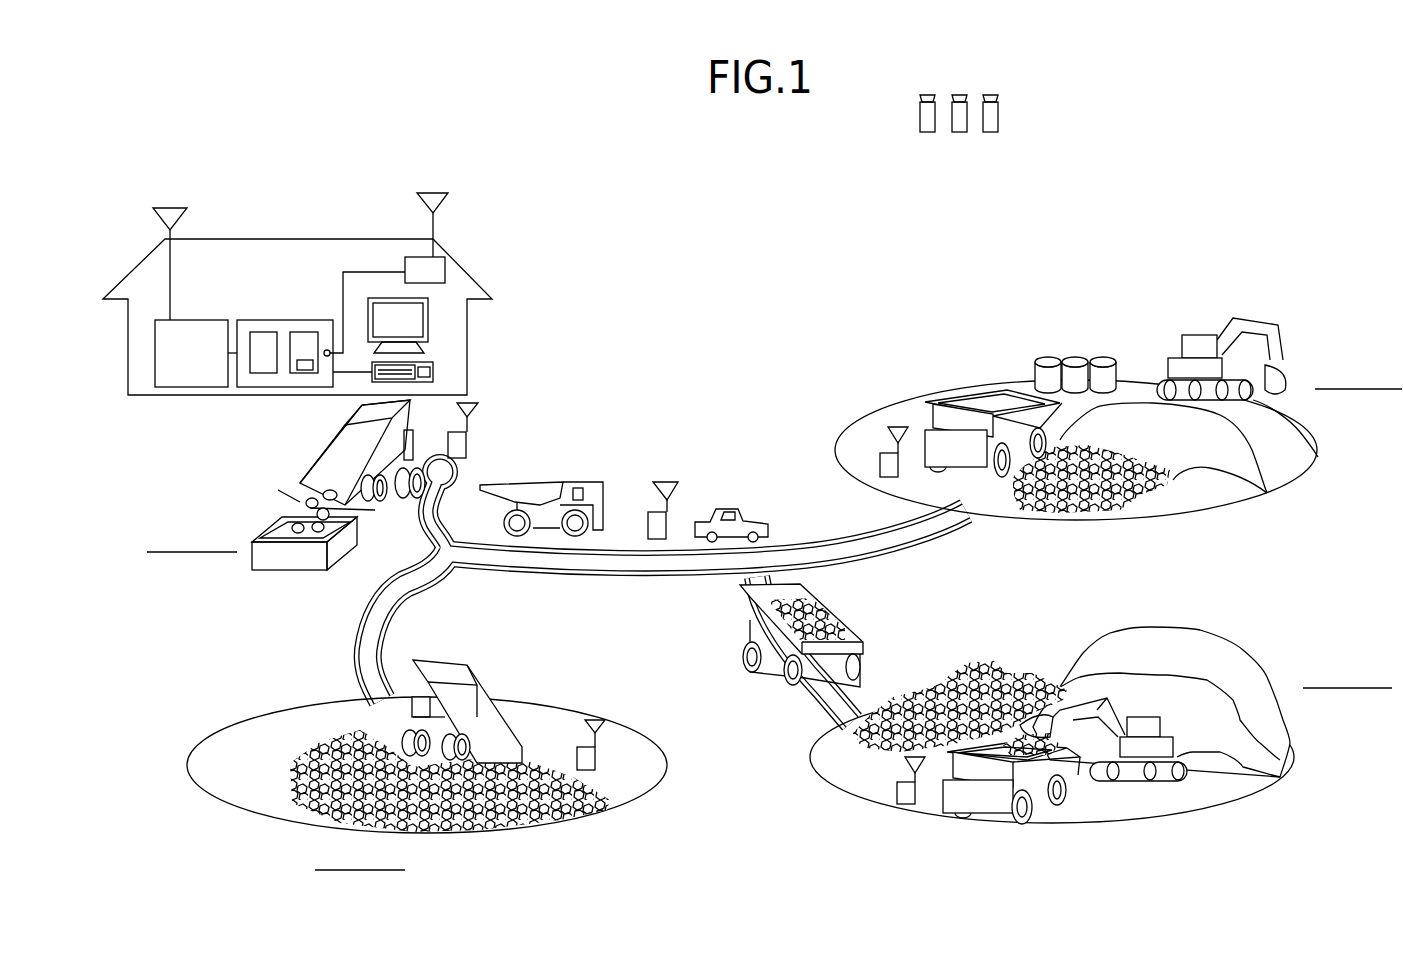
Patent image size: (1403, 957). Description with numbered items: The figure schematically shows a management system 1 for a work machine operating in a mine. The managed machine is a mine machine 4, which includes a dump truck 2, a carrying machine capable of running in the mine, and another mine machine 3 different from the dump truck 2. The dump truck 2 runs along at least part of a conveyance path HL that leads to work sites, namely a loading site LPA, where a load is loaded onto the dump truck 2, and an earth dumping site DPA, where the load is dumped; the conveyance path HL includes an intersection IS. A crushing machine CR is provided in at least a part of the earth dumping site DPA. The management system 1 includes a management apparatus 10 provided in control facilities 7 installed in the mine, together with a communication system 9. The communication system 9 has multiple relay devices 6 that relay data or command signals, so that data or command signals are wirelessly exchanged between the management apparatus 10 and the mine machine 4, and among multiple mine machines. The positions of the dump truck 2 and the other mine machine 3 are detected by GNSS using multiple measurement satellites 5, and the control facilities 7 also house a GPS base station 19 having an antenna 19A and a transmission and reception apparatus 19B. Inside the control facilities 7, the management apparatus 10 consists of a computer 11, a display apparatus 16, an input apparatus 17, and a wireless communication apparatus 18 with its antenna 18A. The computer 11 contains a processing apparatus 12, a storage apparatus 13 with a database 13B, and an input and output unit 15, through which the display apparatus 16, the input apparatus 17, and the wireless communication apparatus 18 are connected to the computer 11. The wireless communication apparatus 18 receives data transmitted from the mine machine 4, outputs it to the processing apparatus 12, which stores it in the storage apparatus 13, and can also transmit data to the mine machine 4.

The management system 1 is at (1111, 187).
The dump truck 2 is at (345, 430).
The another mine machine 3 is at (729, 508).
The mine machine 4 is at (774, 571).
The measurement satellite 5 is at (927, 133).
The relay device 6 is at (469, 425).
The control facilities 7 is at (346, 236).
The communication system 9 is at (616, 233).
The management apparatus 10 is at (307, 257).
The computer 11 is at (283, 317).
The processing apparatus 12 is at (266, 333).
The storage apparatus 13 is at (308, 333).
The database 13B is at (297, 366).
The input and output unit 15 is at (327, 350).
The display apparatus 16 is at (428, 318).
The input apparatus 17 is at (433, 372).
The wireless communication apparatus 18 is at (414, 257).
The antenna 18A is at (433, 193).
The GPS base station 19 is at (195, 305).
The antenna 19A is at (172, 267).
The transmission and reception apparatus 19B is at (193, 337).
The crushing machine CR is at (288, 573).
The earth dumping site DPA is at (276, 699).
The loading site LPA is at (1352, 527).
The conveyance path HL is at (598, 596).
The intersection IS is at (632, 558).